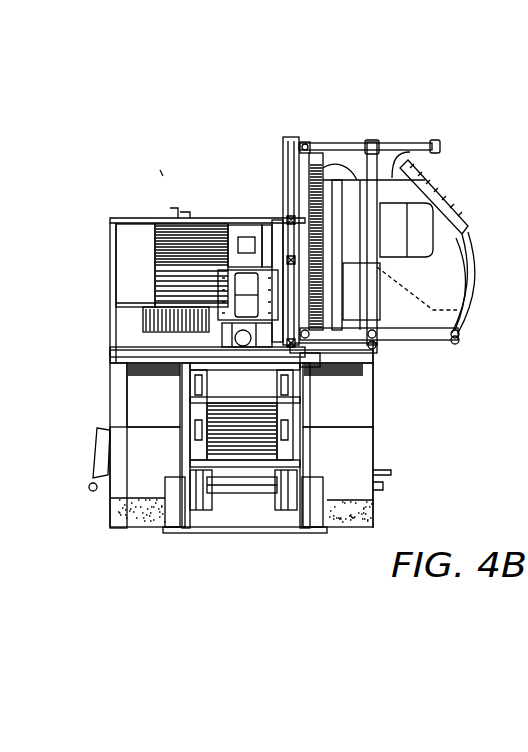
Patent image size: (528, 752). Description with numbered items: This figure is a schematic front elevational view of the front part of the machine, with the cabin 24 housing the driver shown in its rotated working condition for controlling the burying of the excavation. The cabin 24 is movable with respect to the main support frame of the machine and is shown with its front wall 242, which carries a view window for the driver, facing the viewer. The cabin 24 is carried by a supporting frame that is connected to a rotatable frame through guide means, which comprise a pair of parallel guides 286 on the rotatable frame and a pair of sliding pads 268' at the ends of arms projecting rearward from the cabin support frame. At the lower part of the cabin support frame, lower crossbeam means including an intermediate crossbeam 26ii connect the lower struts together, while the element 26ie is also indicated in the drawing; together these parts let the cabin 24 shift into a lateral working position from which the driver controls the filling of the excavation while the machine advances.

The guide 286 is at (290, 137).
The sliding pad 268' is at (259, 238).
The front wall 242 is at (470, 243).
The cabin 24 is at (472, 292).
The end effector 26ie is at (303, 340).
The intermediate crossbeam 26ii is at (377, 347).